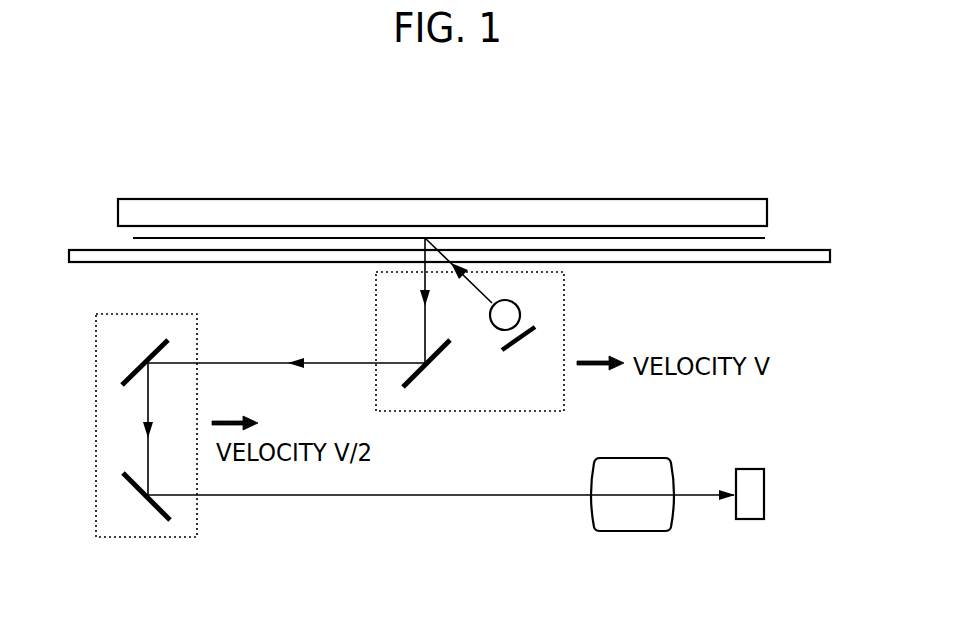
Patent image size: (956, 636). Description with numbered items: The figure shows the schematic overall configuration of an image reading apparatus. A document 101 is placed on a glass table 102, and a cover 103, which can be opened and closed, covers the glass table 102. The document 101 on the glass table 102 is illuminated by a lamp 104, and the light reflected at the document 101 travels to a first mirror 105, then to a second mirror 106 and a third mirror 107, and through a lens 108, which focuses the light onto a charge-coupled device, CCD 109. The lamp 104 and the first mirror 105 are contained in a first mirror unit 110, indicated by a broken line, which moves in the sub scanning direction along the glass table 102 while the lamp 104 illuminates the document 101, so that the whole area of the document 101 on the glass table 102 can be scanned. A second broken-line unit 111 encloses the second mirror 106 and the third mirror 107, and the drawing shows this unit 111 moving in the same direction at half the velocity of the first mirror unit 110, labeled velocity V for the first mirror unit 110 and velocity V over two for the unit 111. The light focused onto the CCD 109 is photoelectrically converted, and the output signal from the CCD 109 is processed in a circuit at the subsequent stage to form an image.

The document 101 is at (765, 239).
The glass table 102 is at (822, 250).
The cover 103 is at (768, 199).
The lamp 104 is at (530, 320).
The first mirror 105 is at (440, 352).
The second mirror 106 is at (143, 362).
The third mirror 107 is at (143, 497).
The lens 108 is at (633, 532).
The charge-coupled device (CCD) 109 is at (750, 520).
The first mirror unit 110 is at (564, 403).
The optical unit moving at velocity V/2 111 is at (96, 325).